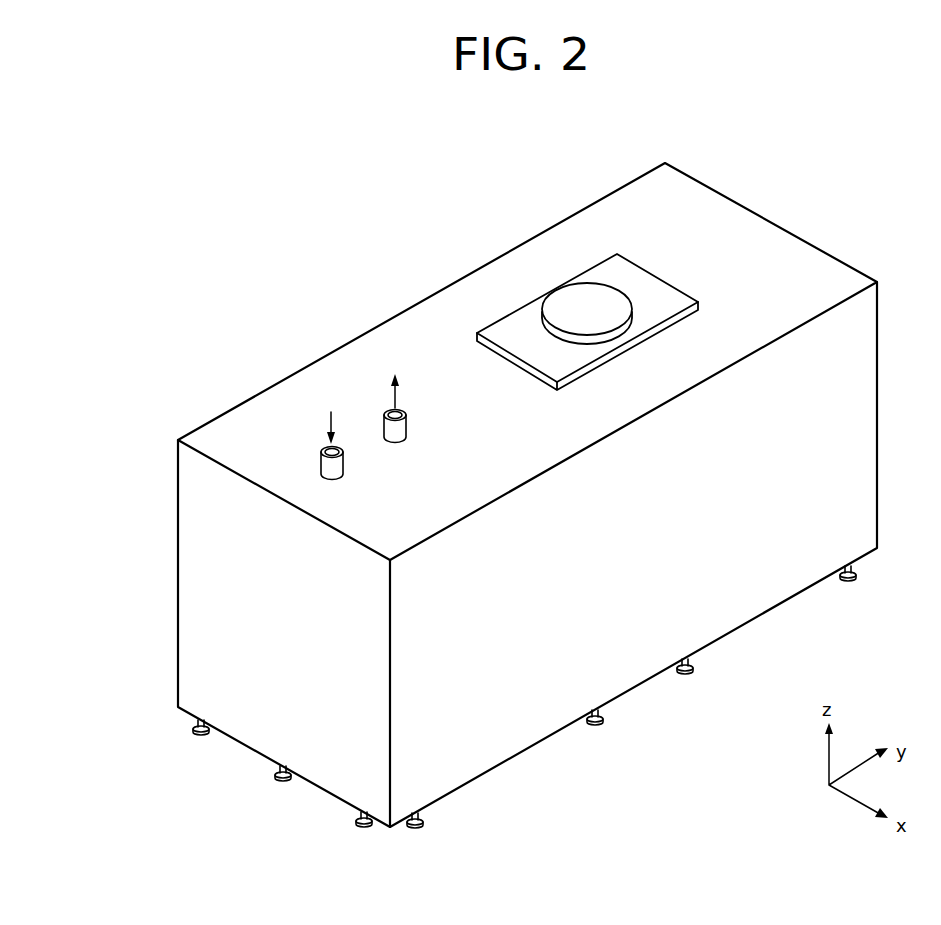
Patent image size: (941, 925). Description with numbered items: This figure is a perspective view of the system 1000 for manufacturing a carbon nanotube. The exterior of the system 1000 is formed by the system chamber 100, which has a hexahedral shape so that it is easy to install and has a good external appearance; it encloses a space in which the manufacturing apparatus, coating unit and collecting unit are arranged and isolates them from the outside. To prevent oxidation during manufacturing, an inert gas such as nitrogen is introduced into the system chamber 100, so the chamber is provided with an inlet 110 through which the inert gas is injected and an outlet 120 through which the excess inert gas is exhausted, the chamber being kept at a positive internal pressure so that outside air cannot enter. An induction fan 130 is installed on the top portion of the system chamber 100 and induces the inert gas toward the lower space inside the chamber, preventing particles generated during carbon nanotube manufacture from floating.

The system for manufacturing a carbon nanotube 1000 is at (491, 475).
The system chamber 100 is at (190, 553).
The gas inlet port 110 is at (322, 447).
The gas outlet port 120 is at (386, 410).
The induction fan 130 is at (563, 295).